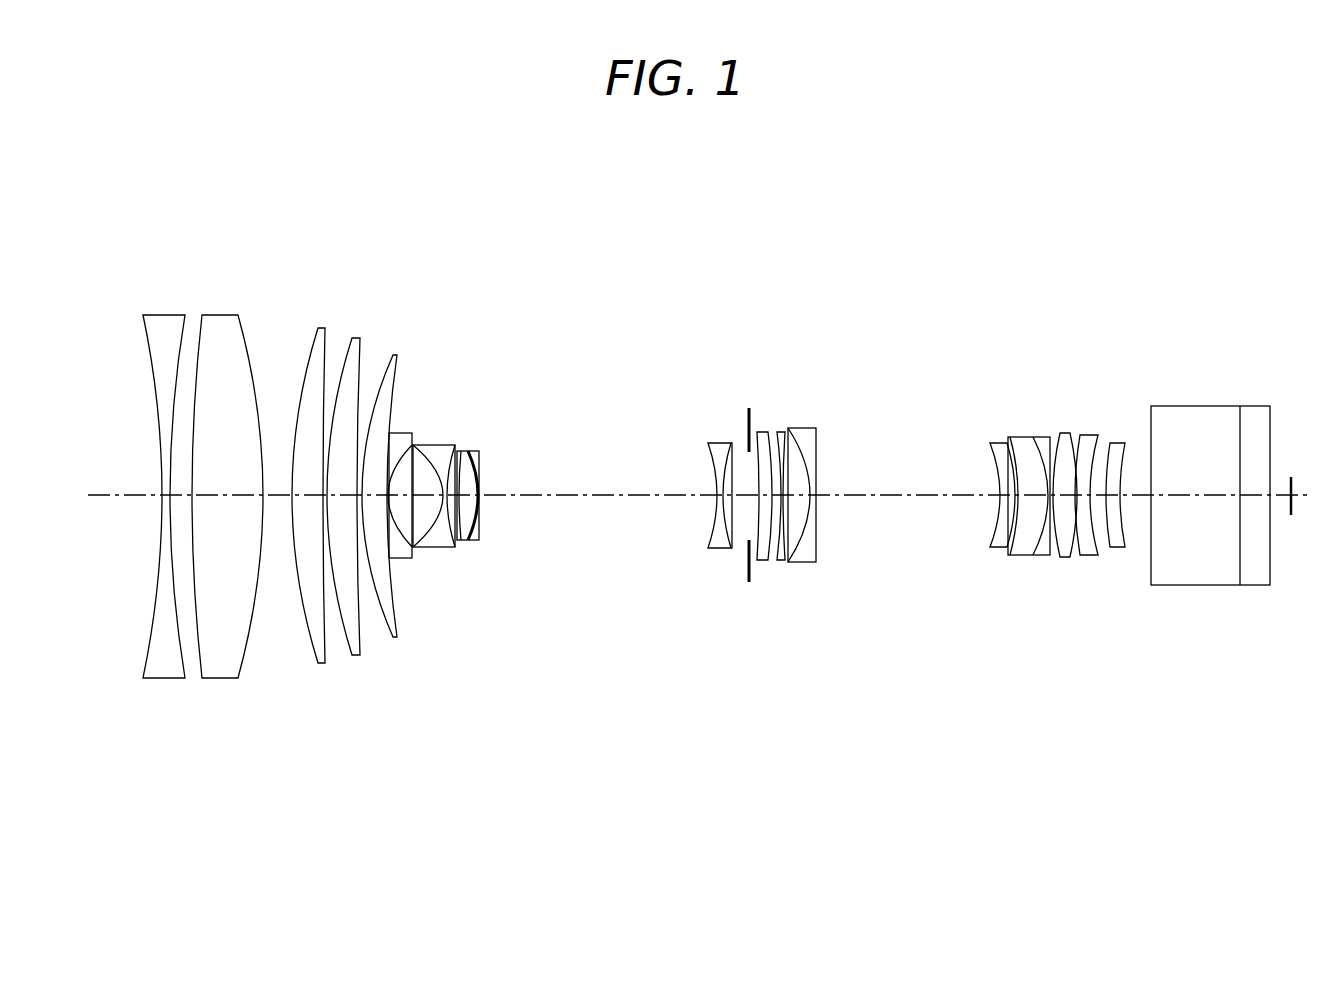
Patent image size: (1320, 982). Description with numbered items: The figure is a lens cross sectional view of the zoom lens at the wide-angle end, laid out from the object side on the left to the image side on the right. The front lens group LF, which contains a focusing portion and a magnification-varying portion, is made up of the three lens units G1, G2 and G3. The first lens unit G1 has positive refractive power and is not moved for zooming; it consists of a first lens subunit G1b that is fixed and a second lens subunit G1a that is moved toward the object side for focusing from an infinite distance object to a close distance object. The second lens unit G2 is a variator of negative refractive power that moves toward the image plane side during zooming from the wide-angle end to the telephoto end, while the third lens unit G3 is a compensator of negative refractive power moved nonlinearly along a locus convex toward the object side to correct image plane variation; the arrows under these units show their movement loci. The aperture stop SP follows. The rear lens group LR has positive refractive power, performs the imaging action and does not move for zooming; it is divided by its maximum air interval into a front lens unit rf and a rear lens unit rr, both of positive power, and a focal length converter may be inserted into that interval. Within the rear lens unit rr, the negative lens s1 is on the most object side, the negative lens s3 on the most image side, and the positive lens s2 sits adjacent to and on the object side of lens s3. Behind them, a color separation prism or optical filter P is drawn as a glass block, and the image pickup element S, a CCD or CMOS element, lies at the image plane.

The front lens group LF is at (728, 194).
The rear lens group LR is at (753, 194).
The first lens unit G1 is at (393, 257).
The second lens subunit G1a is at (282, 327).
The first lens subunit G1b is at (250, 307).
The second lens unit G2 is at (530, 715).
The third lens unit G3 is at (703, 713).
The aperture stop SP is at (751, 622).
The front lens unit rf is at (753, 257).
The rear lens unit rr is at (1132, 257).
The lens having negative refractive power s1 is at (968, 430).
The lens having positive refractive power s2 is at (1073, 430).
The lens having negative refractive power s3 is at (1107, 430).
The color separation prism or optical filter P is at (1148, 625).
The image pickup element S is at (1291, 545).